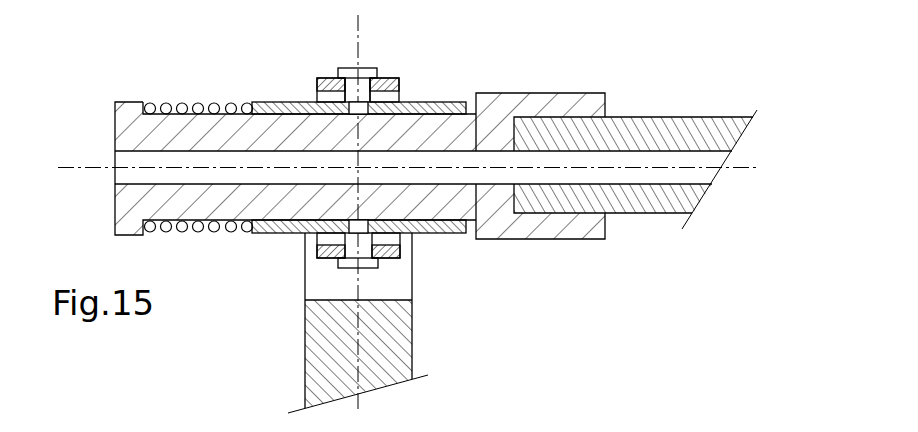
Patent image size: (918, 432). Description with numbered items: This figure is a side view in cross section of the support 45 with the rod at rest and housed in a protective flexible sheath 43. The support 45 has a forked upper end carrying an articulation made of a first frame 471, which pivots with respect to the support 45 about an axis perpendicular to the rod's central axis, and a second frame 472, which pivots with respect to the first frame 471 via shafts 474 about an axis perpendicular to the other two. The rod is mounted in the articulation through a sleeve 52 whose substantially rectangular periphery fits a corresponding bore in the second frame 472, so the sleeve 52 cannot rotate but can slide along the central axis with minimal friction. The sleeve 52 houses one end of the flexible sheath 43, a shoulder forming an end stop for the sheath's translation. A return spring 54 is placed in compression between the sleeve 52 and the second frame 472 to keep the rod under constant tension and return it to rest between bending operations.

The flexible sheath 43 is at (685, 122).
The support 45 is at (313, 338).
The sleeve 52 is at (188, 132).
The compression spring 54 is at (230, 103).
The first frame 471 is at (388, 253).
The second frame 472 is at (442, 103).
The shafts 474 is at (365, 67).